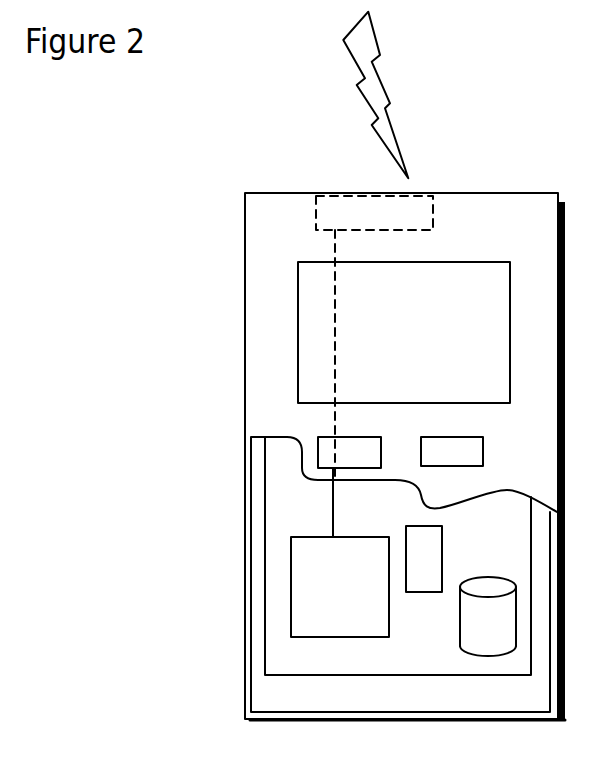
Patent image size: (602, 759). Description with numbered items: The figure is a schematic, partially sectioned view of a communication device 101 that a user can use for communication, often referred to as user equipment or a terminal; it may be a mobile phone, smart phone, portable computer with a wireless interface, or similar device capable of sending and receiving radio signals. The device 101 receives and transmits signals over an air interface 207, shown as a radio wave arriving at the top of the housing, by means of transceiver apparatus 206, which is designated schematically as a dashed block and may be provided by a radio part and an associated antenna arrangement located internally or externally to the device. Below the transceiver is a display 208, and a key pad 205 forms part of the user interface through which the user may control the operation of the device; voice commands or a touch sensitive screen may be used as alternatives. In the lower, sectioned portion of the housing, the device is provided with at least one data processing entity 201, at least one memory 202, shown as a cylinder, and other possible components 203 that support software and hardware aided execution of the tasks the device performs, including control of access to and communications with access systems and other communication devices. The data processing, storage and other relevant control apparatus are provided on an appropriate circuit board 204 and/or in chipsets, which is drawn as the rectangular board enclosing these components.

The communication device 101 is at (247, 236).
The data processing entity 201 is at (298, 569).
The memory 202 is at (482, 629).
The other possible components 203 is at (423, 542).
The circuit board 204 is at (292, 655).
The key pad 205 is at (320, 453).
The transceiver apparatus 206 is at (423, 207).
The air interface 207 is at (412, 117).
The display 208 is at (317, 318).